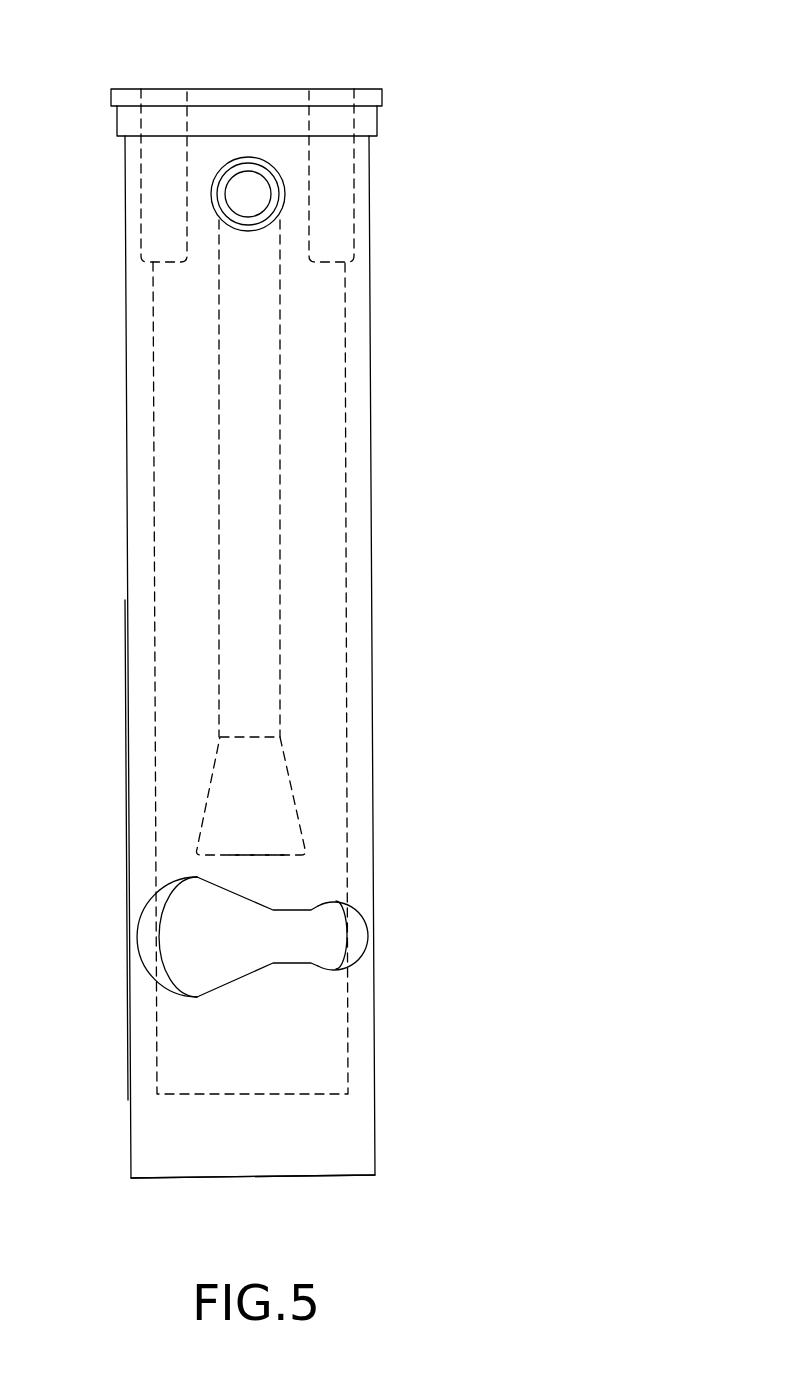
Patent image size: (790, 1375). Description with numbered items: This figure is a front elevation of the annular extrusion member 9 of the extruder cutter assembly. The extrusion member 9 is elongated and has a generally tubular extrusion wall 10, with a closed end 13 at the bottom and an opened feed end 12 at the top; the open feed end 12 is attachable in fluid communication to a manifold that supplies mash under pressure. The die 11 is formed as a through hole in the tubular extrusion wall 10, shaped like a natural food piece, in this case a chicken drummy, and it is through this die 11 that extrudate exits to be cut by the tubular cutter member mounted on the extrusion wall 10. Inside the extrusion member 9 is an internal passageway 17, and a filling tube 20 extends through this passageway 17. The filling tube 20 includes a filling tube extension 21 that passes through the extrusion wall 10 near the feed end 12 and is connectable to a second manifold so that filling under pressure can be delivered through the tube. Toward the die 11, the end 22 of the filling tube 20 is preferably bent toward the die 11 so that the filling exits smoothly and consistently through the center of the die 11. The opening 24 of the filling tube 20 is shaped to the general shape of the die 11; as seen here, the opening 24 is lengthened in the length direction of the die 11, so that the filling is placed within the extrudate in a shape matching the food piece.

The annular extrusion member 9 is at (393, 336).
The tubular extrusion wall 10 is at (148, 1023).
The die 11 is at (295, 917).
The opened feed end 12 is at (141, 89).
The closed end 13 is at (155, 1178).
The internal passageway 17 is at (313, 618).
The filling tube 20 is at (253, 532).
The filling tube extension 21 is at (284, 181).
The end of the filling tube 22 is at (258, 795).
The opening of the filling tube 24 is at (277, 855).